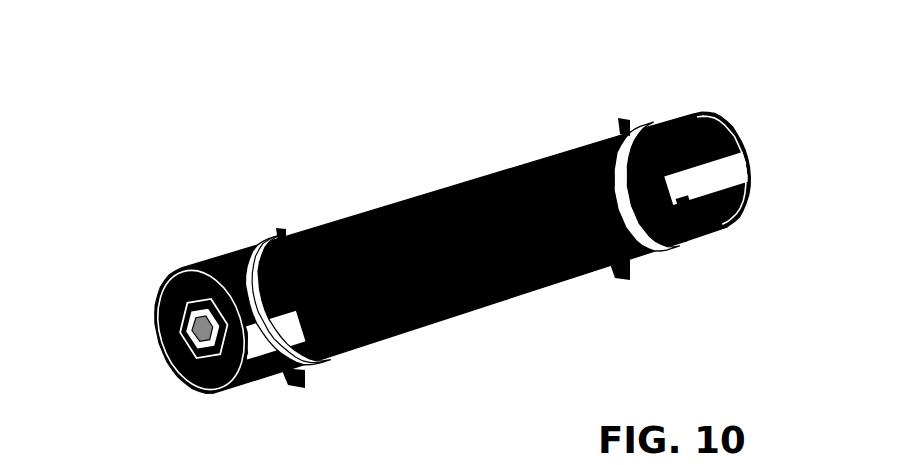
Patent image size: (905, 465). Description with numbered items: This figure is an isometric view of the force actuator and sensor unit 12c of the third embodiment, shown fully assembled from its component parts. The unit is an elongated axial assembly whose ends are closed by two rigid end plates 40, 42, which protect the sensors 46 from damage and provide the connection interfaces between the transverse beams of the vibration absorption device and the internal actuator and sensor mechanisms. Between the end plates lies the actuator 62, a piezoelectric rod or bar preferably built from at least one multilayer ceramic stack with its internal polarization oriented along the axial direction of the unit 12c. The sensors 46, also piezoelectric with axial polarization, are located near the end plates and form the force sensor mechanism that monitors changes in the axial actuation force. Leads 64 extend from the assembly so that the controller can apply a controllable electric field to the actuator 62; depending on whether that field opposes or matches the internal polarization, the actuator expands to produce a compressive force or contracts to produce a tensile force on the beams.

The force actuator and sensor unit 12c is at (453, 228).
The rigid end plate 40 is at (742, 154).
The rigid end plate 42 is at (153, 285).
The sensors 46 is at (258, 234).
The actuator 62 is at (443, 311).
The leads 64 is at (293, 385).